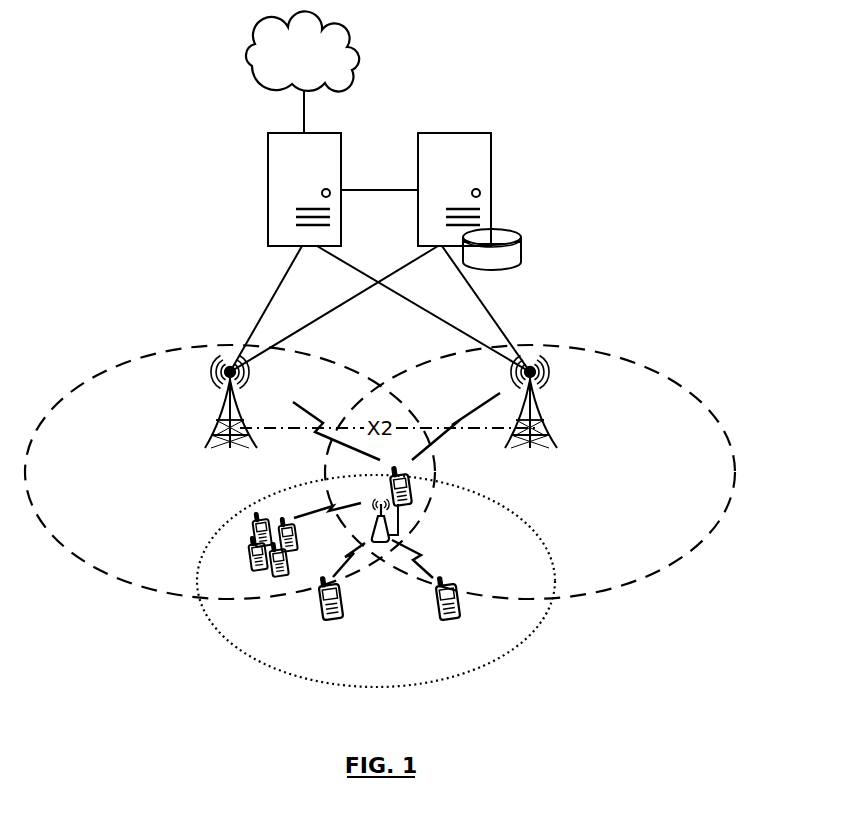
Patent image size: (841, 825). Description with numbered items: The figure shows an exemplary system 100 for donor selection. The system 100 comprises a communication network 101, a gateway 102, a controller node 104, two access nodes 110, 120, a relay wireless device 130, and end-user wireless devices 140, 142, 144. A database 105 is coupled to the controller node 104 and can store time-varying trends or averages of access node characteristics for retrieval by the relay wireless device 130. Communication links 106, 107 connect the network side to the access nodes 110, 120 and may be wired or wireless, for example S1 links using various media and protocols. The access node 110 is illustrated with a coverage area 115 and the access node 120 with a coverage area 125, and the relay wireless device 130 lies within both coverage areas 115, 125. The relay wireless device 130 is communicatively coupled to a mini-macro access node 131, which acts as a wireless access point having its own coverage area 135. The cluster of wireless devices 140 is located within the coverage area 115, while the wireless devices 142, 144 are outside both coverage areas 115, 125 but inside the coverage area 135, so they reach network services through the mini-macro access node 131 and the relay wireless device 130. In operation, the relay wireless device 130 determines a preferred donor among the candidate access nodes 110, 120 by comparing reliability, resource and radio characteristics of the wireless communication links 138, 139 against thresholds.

The system for donor selection 100 is at (460, 70).
The communication network 101 is at (286, 63).
The gateway 102 is at (268, 163).
The controller node 104 is at (493, 173).
The database 105 is at (522, 252).
The communication link 106 is at (357, 270).
The communication link 107 is at (330, 312).
The access node 110 is at (213, 427).
The coverage area 115 is at (48, 416).
The access node 120 is at (547, 428).
The coverage area 125 is at (715, 418).
The relay wireless device 130 is at (418, 507).
The mini-macro access node 131 is at (371, 500).
The coverage area 135 is at (540, 543).
The wireless communication link 138 is at (293, 404).
The wireless communication link 139 is at (462, 413).
The cluster of wireless devices 140 is at (248, 540).
The end-user wireless device 142 is at (327, 623).
The end-user wireless device 144 is at (447, 623).